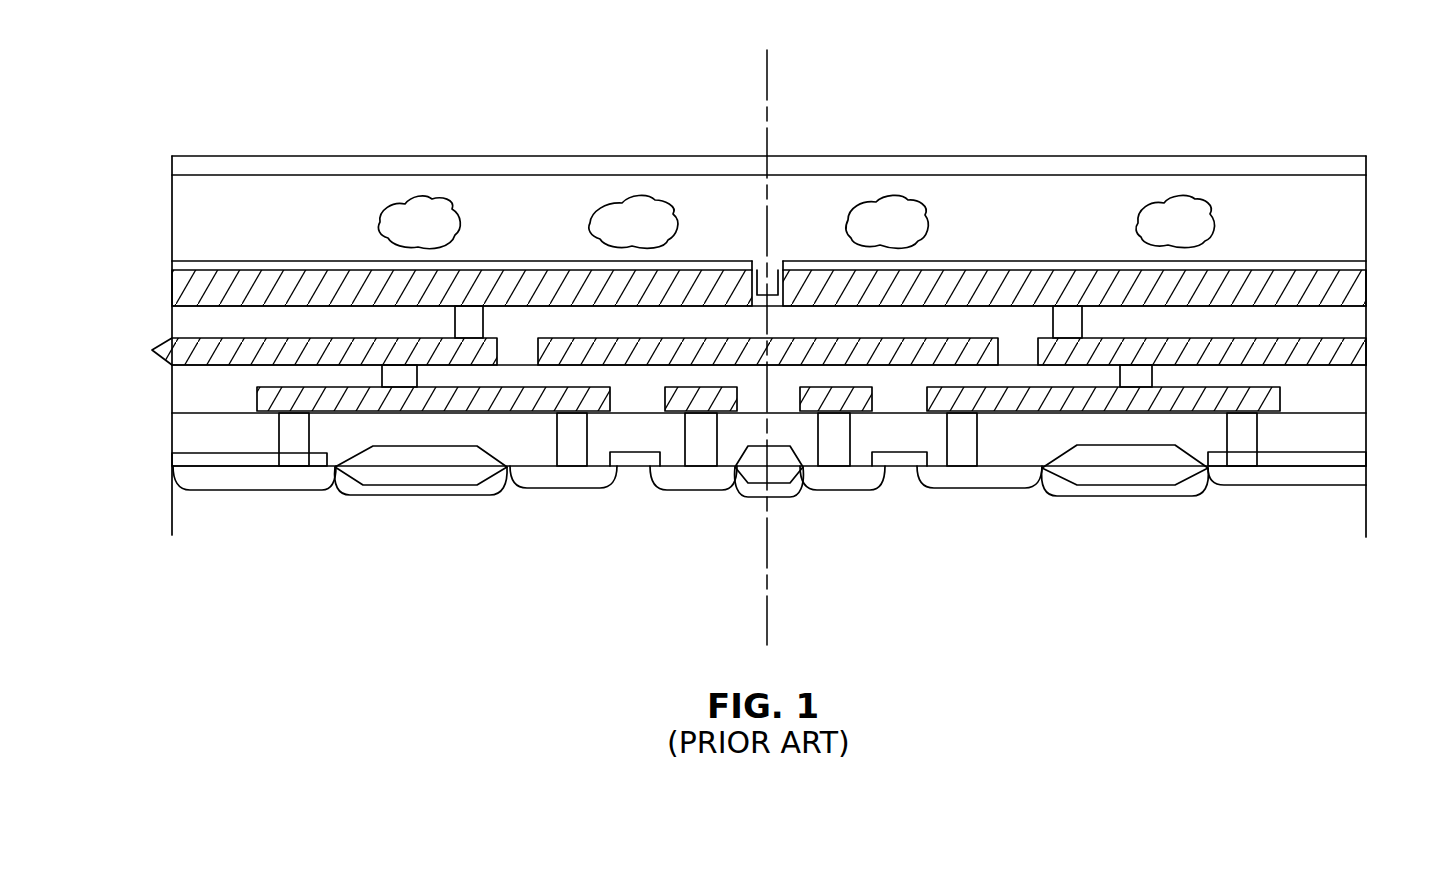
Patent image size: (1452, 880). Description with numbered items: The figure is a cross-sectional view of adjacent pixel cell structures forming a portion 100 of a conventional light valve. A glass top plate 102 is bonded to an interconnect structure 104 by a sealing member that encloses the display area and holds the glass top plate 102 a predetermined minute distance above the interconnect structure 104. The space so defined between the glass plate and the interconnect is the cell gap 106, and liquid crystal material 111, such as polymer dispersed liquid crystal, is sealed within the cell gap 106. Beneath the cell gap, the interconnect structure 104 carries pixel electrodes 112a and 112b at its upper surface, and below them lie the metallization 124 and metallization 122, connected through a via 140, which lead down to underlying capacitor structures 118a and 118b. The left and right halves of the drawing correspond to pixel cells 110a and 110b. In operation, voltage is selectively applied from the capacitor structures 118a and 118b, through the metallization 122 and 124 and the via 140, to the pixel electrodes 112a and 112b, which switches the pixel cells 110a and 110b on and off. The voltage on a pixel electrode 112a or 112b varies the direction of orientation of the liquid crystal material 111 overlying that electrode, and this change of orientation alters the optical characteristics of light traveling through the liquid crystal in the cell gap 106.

The portion of the conventional light valve 100 is at (228, 102).
The glass top plate 102 is at (1358, 168).
The interconnect structure 104 is at (152, 273).
The cell gap 106 is at (152, 178).
The liquid crystal material 111 is at (432, 205).
The pixel electrode 112a is at (495, 278).
The pixel electrode 112b is at (1040, 282).
The via 140 is at (466, 318).
The metallization 124 is at (1358, 350).
The metallization 122 is at (1258, 400).
The capacitor structure 118a is at (597, 498).
The capacitor structure 118b is at (1008, 498).
The pixel cell 110a is at (763, 590).
The pixel cell 110b is at (1360, 590).